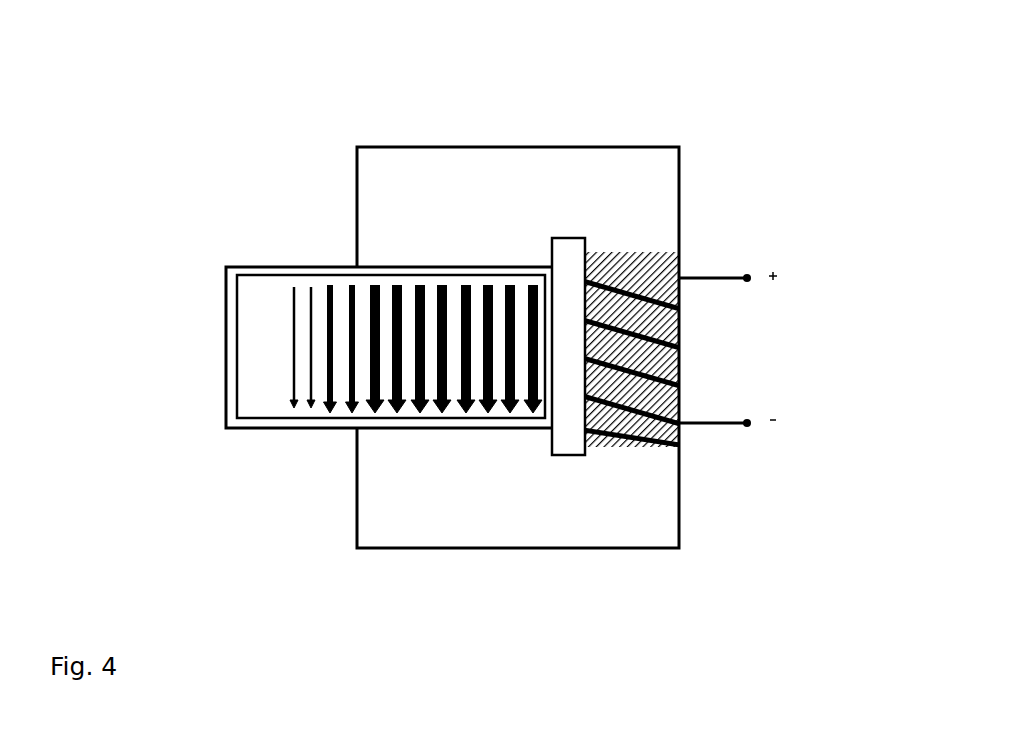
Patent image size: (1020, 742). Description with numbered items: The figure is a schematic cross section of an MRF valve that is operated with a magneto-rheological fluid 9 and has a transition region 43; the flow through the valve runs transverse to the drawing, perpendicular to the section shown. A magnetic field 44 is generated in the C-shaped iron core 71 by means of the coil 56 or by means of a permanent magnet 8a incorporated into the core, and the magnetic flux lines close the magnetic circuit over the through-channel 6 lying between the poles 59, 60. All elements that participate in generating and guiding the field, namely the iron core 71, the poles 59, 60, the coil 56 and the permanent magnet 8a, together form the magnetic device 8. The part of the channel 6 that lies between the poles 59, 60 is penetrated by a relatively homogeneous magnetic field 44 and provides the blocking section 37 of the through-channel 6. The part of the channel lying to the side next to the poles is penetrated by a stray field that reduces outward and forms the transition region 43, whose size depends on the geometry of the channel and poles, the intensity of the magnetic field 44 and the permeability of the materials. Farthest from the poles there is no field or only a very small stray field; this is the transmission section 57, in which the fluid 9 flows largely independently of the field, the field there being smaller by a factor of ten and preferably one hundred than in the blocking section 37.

The through-channel 6 is at (257, 292).
The magnetic device 8 is at (645, 167).
The permanent magnet 8a is at (680, 255).
The magneto-rheological fluid 9 is at (250, 360).
The blocking section 37 is at (483, 297).
The transition region 43 is at (338, 300).
The magnetic field 44 is at (403, 420).
The coil 56 is at (682, 327).
The transmission section 57 is at (273, 383).
The pole 59 is at (418, 258).
The pole 60 is at (382, 433).
The iron core 71 is at (385, 188).